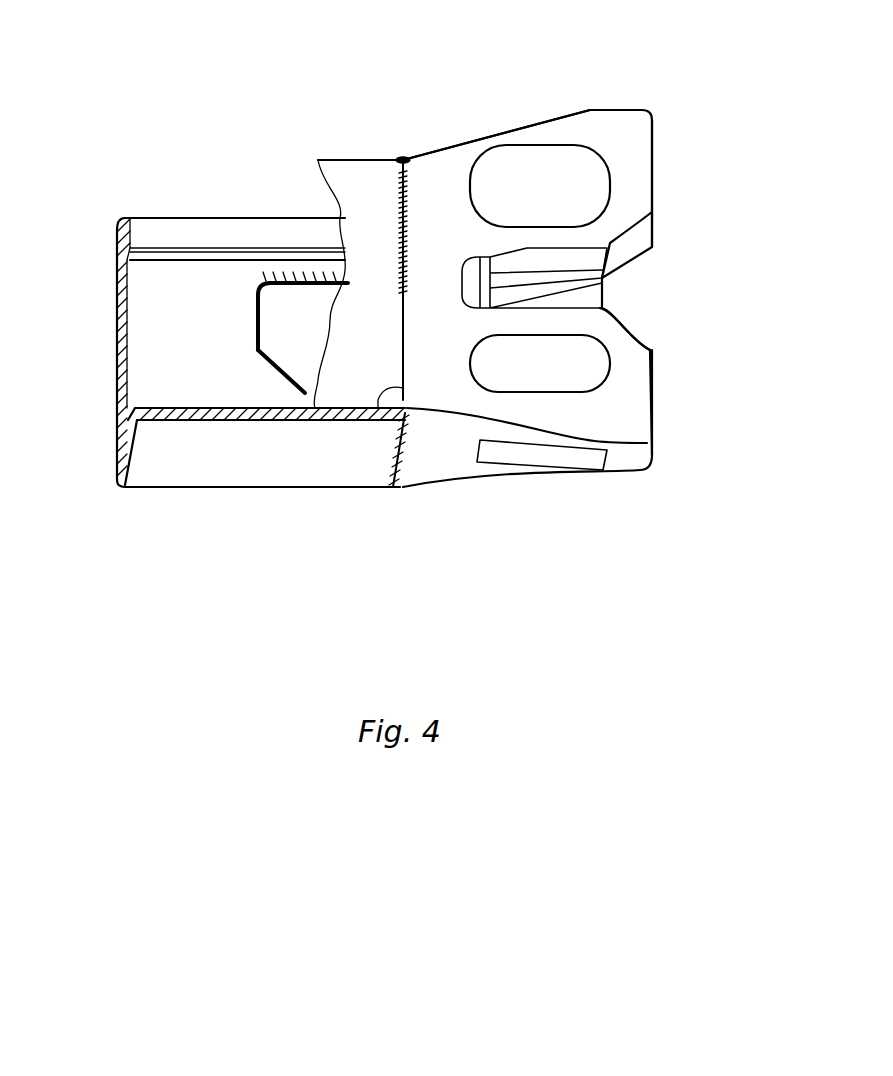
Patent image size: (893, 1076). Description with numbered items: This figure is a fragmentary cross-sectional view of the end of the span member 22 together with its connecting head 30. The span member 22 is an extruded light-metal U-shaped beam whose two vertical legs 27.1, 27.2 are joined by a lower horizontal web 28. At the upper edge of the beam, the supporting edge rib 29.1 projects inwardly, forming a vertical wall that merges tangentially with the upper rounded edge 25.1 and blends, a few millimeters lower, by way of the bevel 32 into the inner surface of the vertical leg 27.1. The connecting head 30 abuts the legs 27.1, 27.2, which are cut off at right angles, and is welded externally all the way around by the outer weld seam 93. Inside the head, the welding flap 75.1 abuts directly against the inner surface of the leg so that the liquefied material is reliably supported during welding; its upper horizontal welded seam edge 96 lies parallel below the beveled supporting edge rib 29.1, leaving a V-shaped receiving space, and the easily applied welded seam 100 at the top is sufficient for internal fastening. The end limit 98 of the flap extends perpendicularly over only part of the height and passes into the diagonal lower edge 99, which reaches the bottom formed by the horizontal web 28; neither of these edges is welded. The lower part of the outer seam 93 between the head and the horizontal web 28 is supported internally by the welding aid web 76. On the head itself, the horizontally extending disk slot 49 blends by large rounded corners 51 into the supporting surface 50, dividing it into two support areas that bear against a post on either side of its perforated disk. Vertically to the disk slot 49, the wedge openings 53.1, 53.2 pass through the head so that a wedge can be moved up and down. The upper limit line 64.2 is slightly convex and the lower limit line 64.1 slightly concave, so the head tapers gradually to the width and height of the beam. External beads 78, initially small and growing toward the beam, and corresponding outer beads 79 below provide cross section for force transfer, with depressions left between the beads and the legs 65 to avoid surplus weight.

The span member 22 is at (232, 498).
The upper rounded edge 25.1 is at (135, 217).
The supporting edge rib 29.1 is at (160, 232).
The bevel 32 is at (142, 255).
The vertical leg 27.1 is at (118, 360).
The vertical leg 27.2 is at (358, 178).
The welding flap 75.1 is at (303, 304).
The end limit 98 is at (255, 320).
The diagonal lower edge 99 is at (268, 368).
The upper horizontal welded seam edge 96 is at (275, 283).
The welded seam 100 is at (305, 285).
The lower horizontal web 28 is at (250, 452).
The welding aid web 76 is at (403, 415).
The outer weld seam 93 is at (408, 190).
The connecting head 30 is at (620, 90).
The upper limit line 64.2 is at (486, 138).
The bead 78 is at (542, 137).
The leg 65 is at (532, 240).
The supporting surface 50 is at (668, 172).
The rounded corner 51 is at (623, 250).
The wedge opening 53.1 is at (592, 281).
The disk slot 49 is at (593, 298).
The lower limit line 64.1 is at (440, 460).
The outer bead 79 is at (547, 403).
The wedge opening 53.2 is at (560, 455).